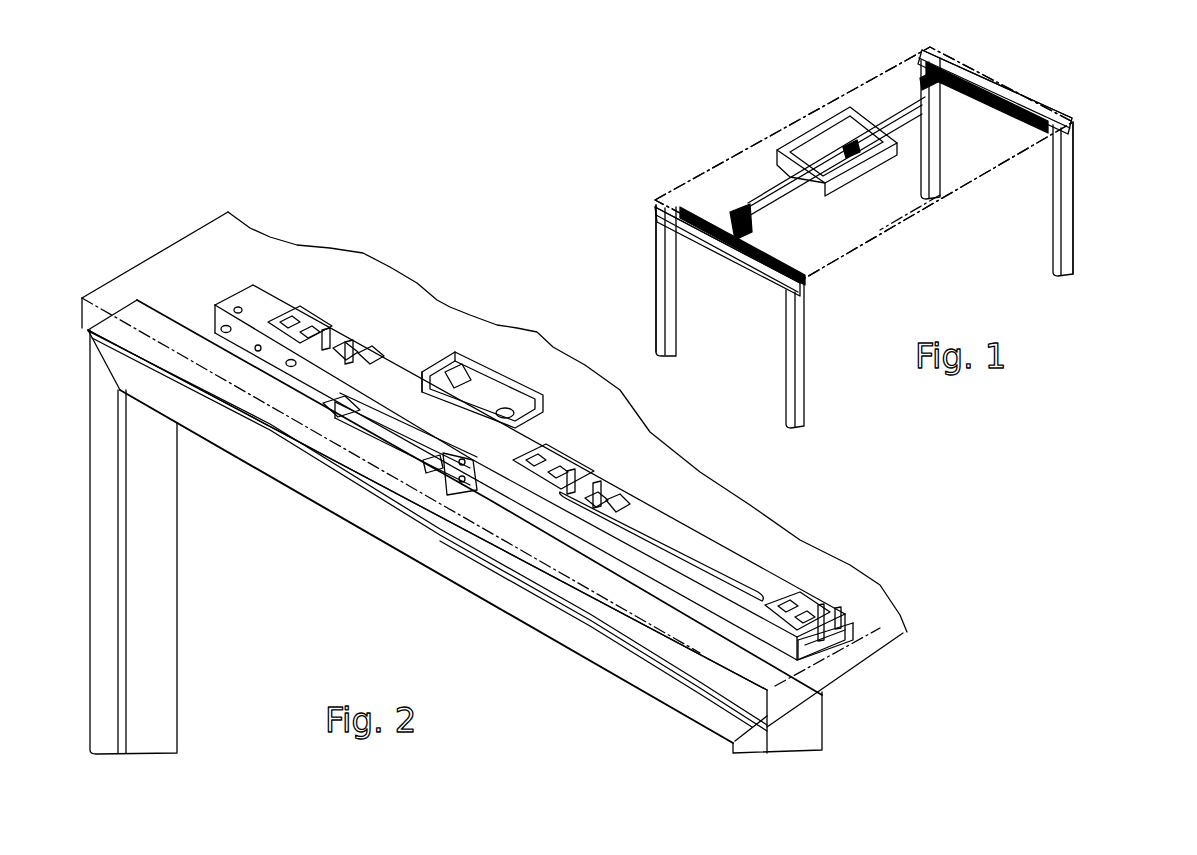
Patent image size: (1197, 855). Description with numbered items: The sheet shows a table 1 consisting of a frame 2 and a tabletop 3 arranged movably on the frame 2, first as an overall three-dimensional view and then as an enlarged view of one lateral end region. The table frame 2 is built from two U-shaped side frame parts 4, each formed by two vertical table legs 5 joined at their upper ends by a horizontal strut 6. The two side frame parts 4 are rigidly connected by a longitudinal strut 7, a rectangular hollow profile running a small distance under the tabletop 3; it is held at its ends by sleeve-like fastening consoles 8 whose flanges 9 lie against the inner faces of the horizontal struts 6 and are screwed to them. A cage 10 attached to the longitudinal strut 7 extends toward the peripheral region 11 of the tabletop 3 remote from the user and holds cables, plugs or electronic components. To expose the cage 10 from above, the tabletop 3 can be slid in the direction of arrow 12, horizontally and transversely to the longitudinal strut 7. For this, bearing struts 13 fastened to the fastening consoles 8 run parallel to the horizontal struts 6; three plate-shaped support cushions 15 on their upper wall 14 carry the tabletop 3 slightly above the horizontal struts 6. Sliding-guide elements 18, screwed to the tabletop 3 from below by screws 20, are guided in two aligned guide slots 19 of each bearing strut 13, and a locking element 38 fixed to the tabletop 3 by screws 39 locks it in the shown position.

In FIG. 1, the table 1 is at (740, 120).
In FIG. 1, the frame 2 is at (808, 334).
In FIG. 2, the frame 2 is at (380, 545).
In FIG. 1, the tabletop 3 is at (870, 214).
In FIG. 2, the tabletop 3 is at (230, 225).
In FIG. 1, the side frame part 4 is at (1076, 152).
In FIG. 1, the table leg 5 is at (657, 283).
In FIG. 2, the table leg 5 is at (158, 598).
In FIG. 1, the horizontal strut 6 is at (725, 257).
In FIG. 2, the horizontal strut 6 is at (447, 555).
In FIG. 1, the longitudinal strut 7 is at (907, 120).
In FIG. 2, the longitudinal strut 7 is at (516, 345).
In FIG. 1, the fastening console 8 is at (746, 222).
In FIG. 2, the fastening console 8 is at (458, 380).
In FIG. 2, the flange 9 is at (458, 483).
In FIG. 1, the cage 10 is at (820, 147).
In FIG. 1, the peripheral region 11 is at (773, 130).
In FIG. 1, the arrow 12 is at (888, 260).
In FIG. 1, the bearing strut 13 is at (772, 244).
In FIG. 2, the bearing strut 13 is at (703, 543).
In FIG. 2, the upper wall 14 is at (663, 543).
In FIG. 2, the support cushion 15 is at (300, 318).
In FIG. 2, the sliding-guide element 18 is at (358, 340).
In FIG. 2, the guide slot 19 is at (380, 352).
In FIG. 2, the screw 20 is at (335, 330).
In FIG. 2, the locking element 38 is at (847, 637).
In FIG. 2, the screw 39 is at (847, 612).